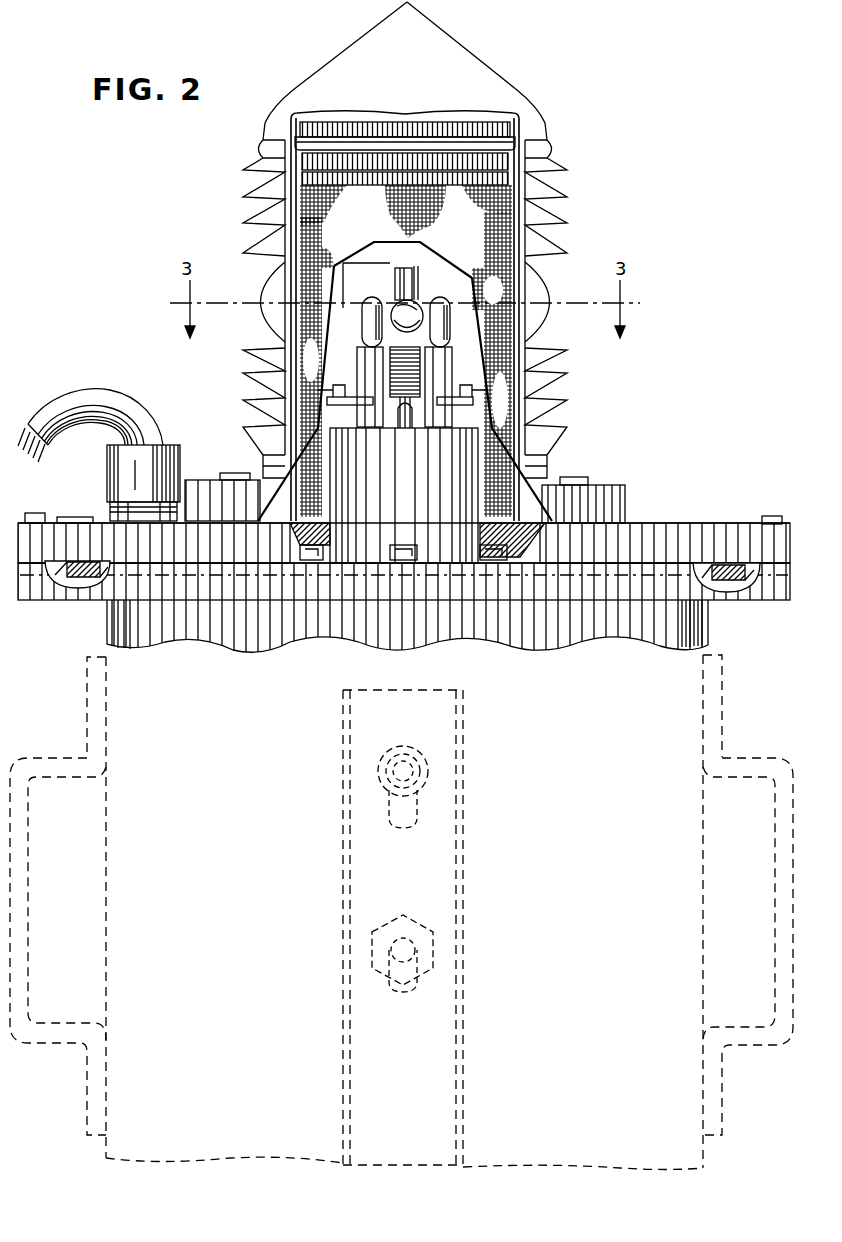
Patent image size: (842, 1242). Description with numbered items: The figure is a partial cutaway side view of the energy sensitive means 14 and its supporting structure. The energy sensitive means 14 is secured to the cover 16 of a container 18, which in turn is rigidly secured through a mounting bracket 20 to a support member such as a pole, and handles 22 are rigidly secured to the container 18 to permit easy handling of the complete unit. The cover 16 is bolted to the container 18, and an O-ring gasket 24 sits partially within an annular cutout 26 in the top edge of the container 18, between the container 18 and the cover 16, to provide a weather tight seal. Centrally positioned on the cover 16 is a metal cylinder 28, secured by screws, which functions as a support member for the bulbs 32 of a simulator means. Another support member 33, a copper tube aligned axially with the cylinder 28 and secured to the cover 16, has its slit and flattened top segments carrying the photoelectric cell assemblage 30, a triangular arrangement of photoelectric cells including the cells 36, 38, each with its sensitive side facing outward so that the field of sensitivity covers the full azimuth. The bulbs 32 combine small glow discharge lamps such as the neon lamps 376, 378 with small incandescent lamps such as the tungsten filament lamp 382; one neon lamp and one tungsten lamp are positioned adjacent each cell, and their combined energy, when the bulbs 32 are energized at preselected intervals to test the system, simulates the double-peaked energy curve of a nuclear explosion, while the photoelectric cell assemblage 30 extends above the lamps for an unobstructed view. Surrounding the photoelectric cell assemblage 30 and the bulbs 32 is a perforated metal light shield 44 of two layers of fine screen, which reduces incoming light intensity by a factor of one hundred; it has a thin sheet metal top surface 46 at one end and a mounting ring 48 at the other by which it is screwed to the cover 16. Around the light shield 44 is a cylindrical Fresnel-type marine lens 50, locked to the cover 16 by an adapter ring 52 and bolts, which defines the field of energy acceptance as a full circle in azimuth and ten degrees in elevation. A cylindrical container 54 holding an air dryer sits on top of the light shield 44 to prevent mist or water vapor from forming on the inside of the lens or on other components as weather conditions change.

The energy sensitive means 14 is at (576, 172).
The cover 16 is at (677, 523).
The container 18 is at (711, 642).
The mounting bracket 20 is at (455, 858).
The handles 22 is at (60, 762).
The O-ring gasket 24 is at (78, 556).
The annular cutout 26 is at (88, 586).
The metal cylinder 28 is at (345, 457).
The photoelectric cell assemblage 30 is at (418, 279).
The bulbs 32 is at (384, 294).
The support member 33 is at (404, 266).
The photoelectric cell 36 is at (404, 273).
The photoelectric cell 38 is at (417, 292).
The light shield 44 is at (513, 214).
The top surface 46 is at (517, 160).
The mounting ring 48 is at (503, 526).
The cylindrical Fresnel-type marine lens 50 is at (560, 365).
The adapter ring 52 is at (627, 487).
The cylindrical container 54 is at (518, 124).
The neon lamp 376 is at (365, 322).
The neon lamp 378 is at (452, 332).
The tungsten filament lamp 382 is at (420, 306).